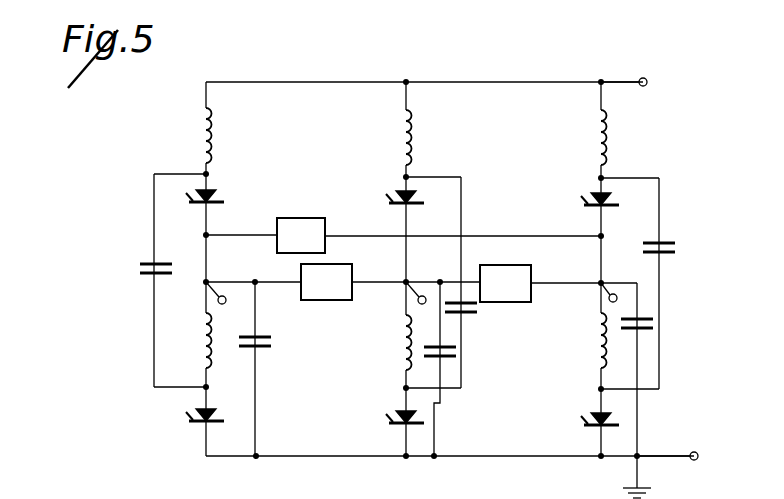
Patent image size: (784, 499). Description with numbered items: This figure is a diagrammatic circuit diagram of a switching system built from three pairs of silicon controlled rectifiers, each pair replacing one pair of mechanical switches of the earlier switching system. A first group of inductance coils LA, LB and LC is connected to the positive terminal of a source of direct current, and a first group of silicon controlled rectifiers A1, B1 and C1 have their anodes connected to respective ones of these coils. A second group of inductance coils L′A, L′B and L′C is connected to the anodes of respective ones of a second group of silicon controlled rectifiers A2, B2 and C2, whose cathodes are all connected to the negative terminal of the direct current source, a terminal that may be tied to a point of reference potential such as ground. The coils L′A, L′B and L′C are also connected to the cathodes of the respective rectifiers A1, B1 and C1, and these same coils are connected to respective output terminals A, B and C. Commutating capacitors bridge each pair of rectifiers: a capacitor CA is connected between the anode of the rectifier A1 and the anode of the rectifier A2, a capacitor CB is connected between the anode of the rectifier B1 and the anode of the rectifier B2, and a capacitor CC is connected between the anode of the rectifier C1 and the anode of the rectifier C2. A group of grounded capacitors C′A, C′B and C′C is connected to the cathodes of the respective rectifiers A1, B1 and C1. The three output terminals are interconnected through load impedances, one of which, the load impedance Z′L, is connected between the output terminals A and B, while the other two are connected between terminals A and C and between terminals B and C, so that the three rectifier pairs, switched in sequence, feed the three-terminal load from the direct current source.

The inductance coil LA is at (200, 148).
The inductance coil LB is at (400, 142).
The inductance coil LC is at (596, 144).
The inductance coil L′A is at (202, 350).
The inductance coil L′B is at (402, 350).
The inductance coil L′C is at (598, 350).
The capacitor CA is at (142, 280).
The capacitor CB is at (472, 316).
The capacitor CC is at (674, 252).
The grounded capacitor C′A is at (267, 348).
The grounded capacitor C′B is at (443, 357).
The grounded capacitor C′C is at (654, 328).
The silicon controlled rectifier A1 is at (222, 198).
The silicon controlled rectifier A2 is at (210, 426).
The silicon controlled rectifier B1 is at (416, 205).
The silicon controlled rectifier B2 is at (417, 426).
The silicon controlled rectifier C1 is at (606, 210).
The silicon controlled rectifier C2 is at (618, 426).
The output terminal A is at (222, 297).
The output terminal B is at (420, 301).
The output terminal C is at (615, 296).
The load impedance Z′L is at (323, 282).